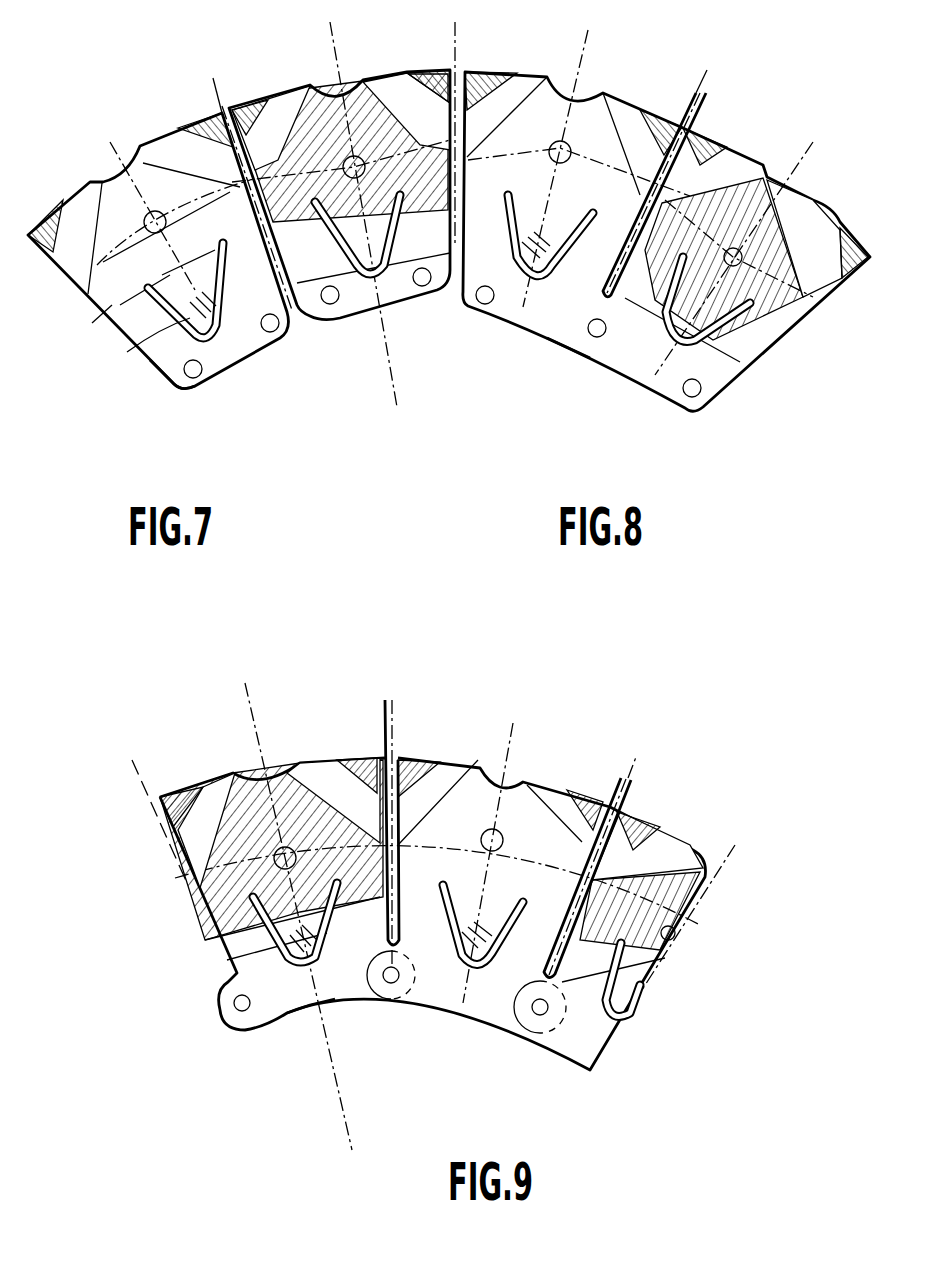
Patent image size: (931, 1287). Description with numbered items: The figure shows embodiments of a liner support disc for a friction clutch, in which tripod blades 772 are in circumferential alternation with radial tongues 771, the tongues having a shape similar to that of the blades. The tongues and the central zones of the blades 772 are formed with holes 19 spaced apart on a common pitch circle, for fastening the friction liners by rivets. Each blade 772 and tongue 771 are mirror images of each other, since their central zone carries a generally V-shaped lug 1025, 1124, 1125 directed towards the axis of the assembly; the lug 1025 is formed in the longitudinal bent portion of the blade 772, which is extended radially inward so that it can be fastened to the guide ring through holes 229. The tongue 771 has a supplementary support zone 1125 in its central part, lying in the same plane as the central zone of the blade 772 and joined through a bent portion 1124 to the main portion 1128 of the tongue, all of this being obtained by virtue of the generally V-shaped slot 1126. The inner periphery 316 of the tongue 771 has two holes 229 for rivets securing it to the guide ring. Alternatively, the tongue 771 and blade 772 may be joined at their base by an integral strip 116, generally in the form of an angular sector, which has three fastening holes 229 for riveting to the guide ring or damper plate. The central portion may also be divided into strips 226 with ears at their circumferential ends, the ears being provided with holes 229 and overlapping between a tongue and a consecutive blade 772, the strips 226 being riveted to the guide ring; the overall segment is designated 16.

In FIG. 7, the stator segment 16 is at (266, 395).
In FIG. 8, the stator segment 16 is at (636, 388).
In FIG. 9, the stator segment 16 is at (468, 1025).
In FIG. 7, the holes 19 is at (156, 211).
In FIG. 8, the holes 19 is at (568, 144).
In FIG. 9, the holes 19 is at (497, 830).
In FIG. 8, the strip 116 is at (556, 322).
In FIG. 9, the strips 226 is at (287, 992).
In FIG. 7, the holes 229 is at (193, 378).
In FIG. 8, the holes 229 is at (596, 337).
In FIG. 9, the holes 229 is at (236, 1006).
In FIG. 7, the inner periphery 316 is at (218, 362).
In FIG. 7, the tongue 771 is at (45, 200).
In FIG. 8, the tongue 771 is at (512, 68).
In FIG. 9, the tongue 771 is at (447, 740).
In FIG. 7, the blade 772 is at (262, 82).
In FIG. 8, the blade 772 is at (780, 150).
In FIG. 9, the blade 772 is at (183, 775).
In FIG. 8, the lug 1025 is at (712, 340).
In FIG. 9, the lug 1025 is at (283, 930).
In FIG. 7, the bent portion 1124 is at (140, 340).
In FIG. 7, the supplementary support zone 1125 is at (222, 295).
In FIG. 8, the supplementary support zone 1125 is at (528, 268).
In FIG. 9, the supplementary support zone 1125 is at (488, 948).
In FIG. 7, the slot 1126 is at (168, 364).
In FIG. 7, the main portion 1128 is at (92, 323).